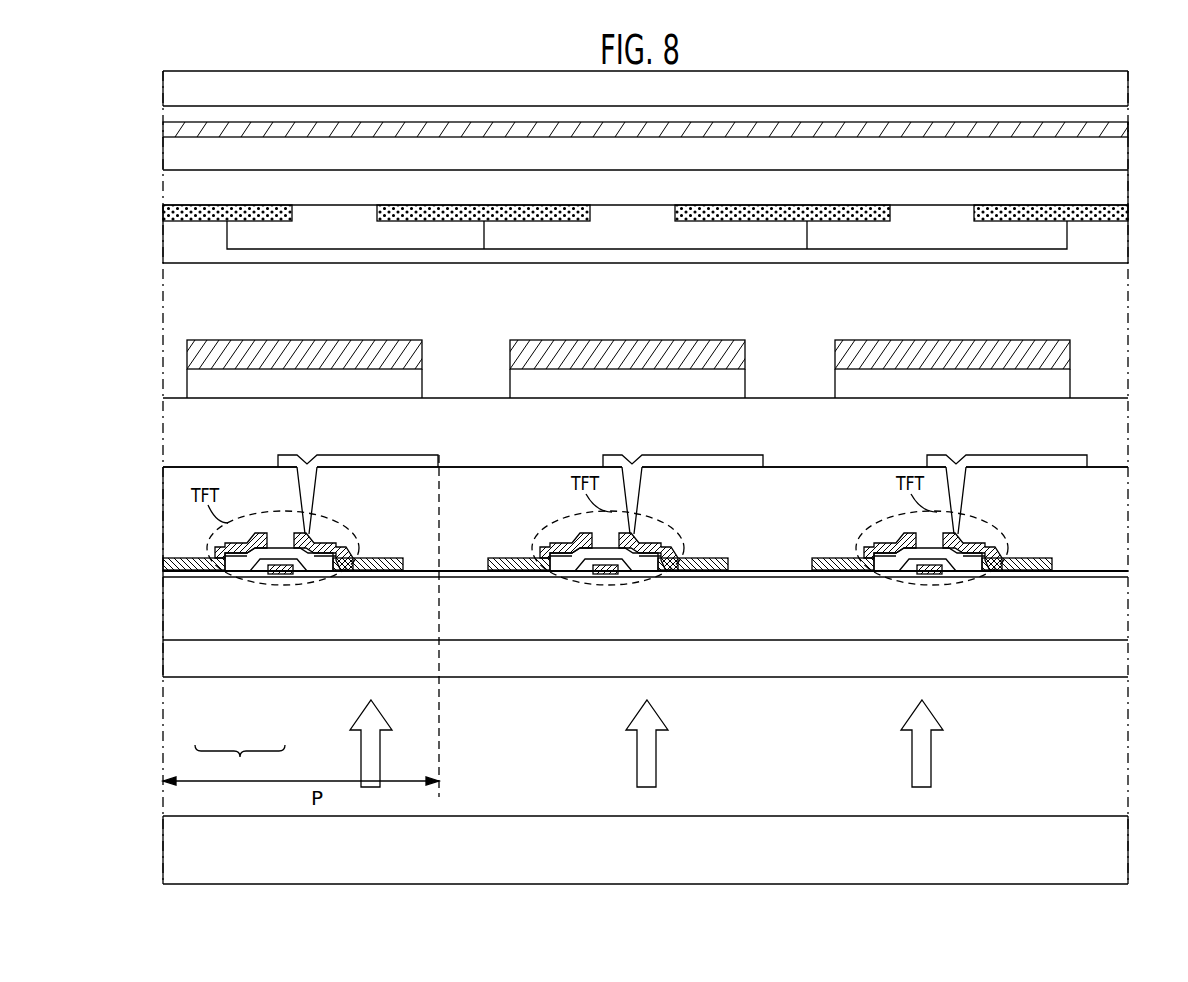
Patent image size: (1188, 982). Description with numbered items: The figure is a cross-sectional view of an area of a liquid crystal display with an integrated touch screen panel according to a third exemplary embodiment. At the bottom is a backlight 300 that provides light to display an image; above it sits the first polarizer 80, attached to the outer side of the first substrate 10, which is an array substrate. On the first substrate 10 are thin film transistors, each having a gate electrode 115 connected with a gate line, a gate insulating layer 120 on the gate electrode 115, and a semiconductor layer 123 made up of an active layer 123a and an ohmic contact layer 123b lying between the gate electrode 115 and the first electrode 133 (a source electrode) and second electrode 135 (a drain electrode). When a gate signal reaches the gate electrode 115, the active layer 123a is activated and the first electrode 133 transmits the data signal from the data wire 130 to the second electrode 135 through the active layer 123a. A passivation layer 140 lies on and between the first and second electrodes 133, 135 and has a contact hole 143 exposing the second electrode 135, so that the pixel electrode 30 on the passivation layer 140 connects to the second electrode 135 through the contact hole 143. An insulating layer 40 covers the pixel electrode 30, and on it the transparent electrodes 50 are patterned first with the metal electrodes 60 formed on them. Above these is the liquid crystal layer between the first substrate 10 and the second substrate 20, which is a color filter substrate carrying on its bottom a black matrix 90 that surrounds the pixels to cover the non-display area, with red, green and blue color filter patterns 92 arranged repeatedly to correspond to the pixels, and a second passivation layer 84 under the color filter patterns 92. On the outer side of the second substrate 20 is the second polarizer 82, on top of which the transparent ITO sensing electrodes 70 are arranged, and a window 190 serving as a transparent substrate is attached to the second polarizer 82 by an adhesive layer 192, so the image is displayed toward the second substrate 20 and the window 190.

The first substrate 10 is at (1122, 619).
The second substrate 20 is at (1122, 189).
The pixel electrode 30 is at (418, 460).
The insulating layer 40 is at (168, 432).
The transparent electrodes 50 is at (188, 385).
The metal electrodes 60 is at (188, 347).
The sensing electrodes 70 is at (1122, 132).
The first polarizer 80 is at (1122, 303).
The second polarizer 82 is at (172, 153).
The second passivation layer 84 is at (1122, 243).
The black matrix 90 is at (168, 210).
The color filter patterns 92 is at (232, 237).
The gate electrode 115 is at (283, 574).
The gate insulating layer 120 is at (412, 574).
The semiconductor layer 123 is at (240, 761).
The active layer 123a is at (231, 565).
The ohmic contact layer 123b is at (250, 562).
The data wire 130 is at (177, 572).
The first electrode 133 is at (258, 537).
The second electrode 135 is at (323, 537).
The passivation layer 140 is at (168, 488).
The contact hole 143 is at (330, 492).
The window 190 is at (1122, 81).
The adhesive layer 192 is at (1122, 110).
The backlight 300 is at (1122, 846).